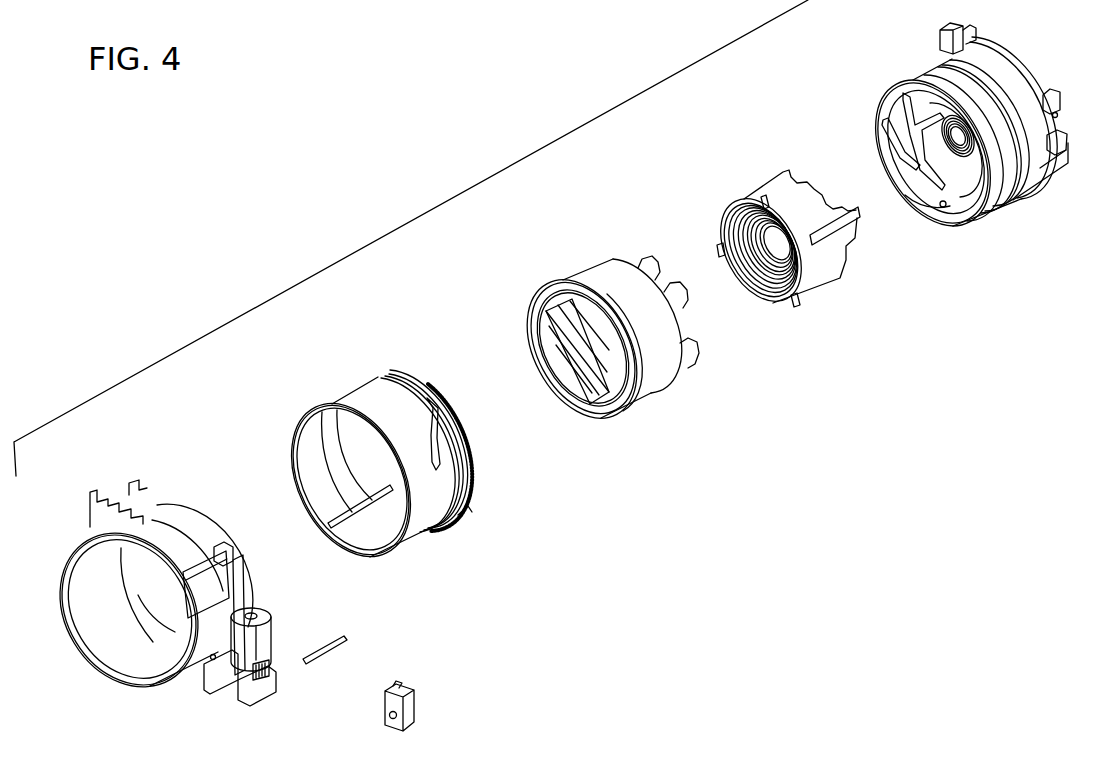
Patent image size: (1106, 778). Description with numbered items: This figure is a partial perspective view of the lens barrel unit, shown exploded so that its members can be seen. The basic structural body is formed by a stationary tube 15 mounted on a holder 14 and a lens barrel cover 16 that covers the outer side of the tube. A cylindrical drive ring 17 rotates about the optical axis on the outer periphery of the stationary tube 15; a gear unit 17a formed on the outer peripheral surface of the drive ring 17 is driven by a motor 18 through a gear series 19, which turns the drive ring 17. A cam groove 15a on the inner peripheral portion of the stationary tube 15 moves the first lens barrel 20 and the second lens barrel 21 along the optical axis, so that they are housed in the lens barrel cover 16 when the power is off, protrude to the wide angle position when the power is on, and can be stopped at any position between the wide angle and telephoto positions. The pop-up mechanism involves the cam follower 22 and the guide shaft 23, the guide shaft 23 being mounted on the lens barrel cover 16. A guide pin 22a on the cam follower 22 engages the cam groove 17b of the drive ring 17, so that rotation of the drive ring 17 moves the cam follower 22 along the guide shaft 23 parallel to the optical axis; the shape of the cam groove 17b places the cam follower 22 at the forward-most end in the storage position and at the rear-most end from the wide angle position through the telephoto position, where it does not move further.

The holder 14 is at (940, 40).
The stationary tube 15 is at (960, 171).
The cam groove 15a is at (942, 208).
The lens barrel cover 16 is at (124, 506).
The drive ring 17 is at (417, 452).
The gear unit 17a is at (478, 487).
The cam groove 17b is at (434, 430).
The motor 18 is at (243, 651).
The gear series 19 is at (265, 700).
The first lens barrel 20 is at (663, 393).
The second lens barrel 21 is at (786, 172).
The cam follower 22 is at (414, 708).
The guide pin 22a is at (398, 683).
The guide shaft 23 is at (327, 640).